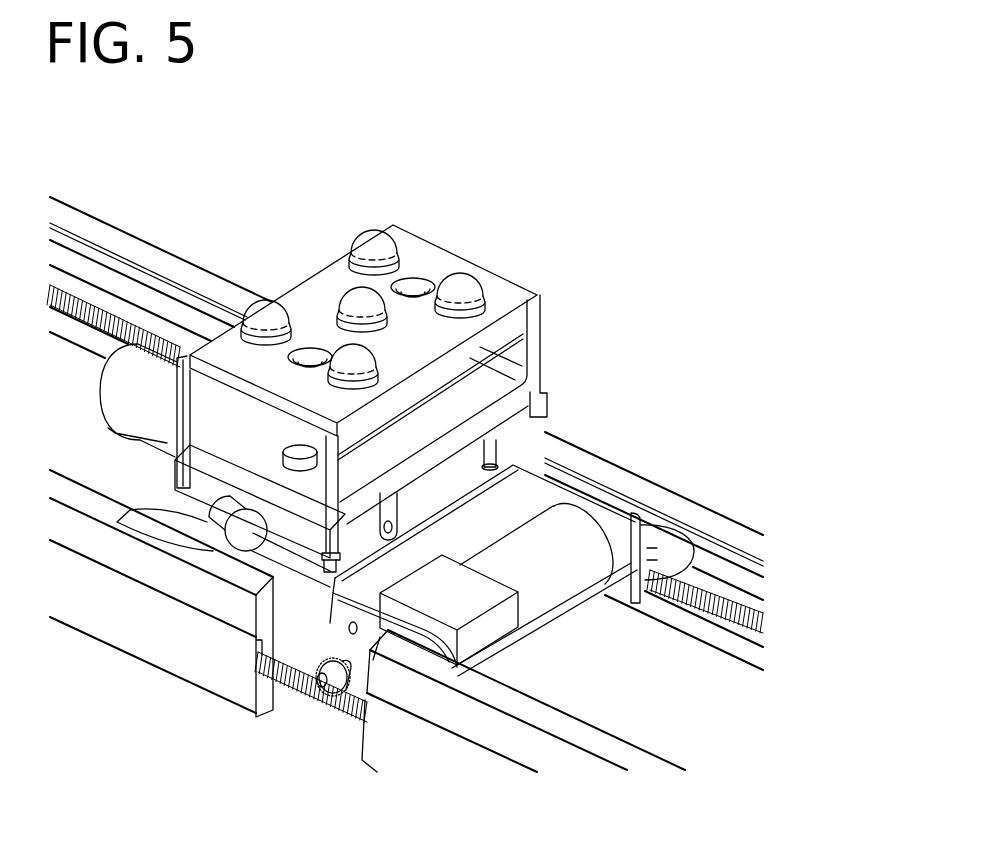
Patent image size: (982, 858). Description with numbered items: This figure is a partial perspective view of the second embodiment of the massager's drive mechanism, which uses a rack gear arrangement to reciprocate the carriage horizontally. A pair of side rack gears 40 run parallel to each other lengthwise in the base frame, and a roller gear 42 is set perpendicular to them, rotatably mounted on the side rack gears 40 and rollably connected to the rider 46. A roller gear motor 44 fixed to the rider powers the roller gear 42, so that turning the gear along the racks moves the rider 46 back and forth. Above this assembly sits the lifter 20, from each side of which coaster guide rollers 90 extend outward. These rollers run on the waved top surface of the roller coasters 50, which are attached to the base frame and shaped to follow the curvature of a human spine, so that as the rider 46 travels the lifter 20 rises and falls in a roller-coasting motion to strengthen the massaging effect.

The lifter 20 is at (537, 330).
The side rack gears 40 is at (350, 713).
The roller gear 42 is at (317, 687).
The roller gear motor 44 is at (598, 540).
The rider 46 is at (583, 503).
The roller coasters 50 is at (167, 537).
The coaster guide rollers 90 is at (230, 537).